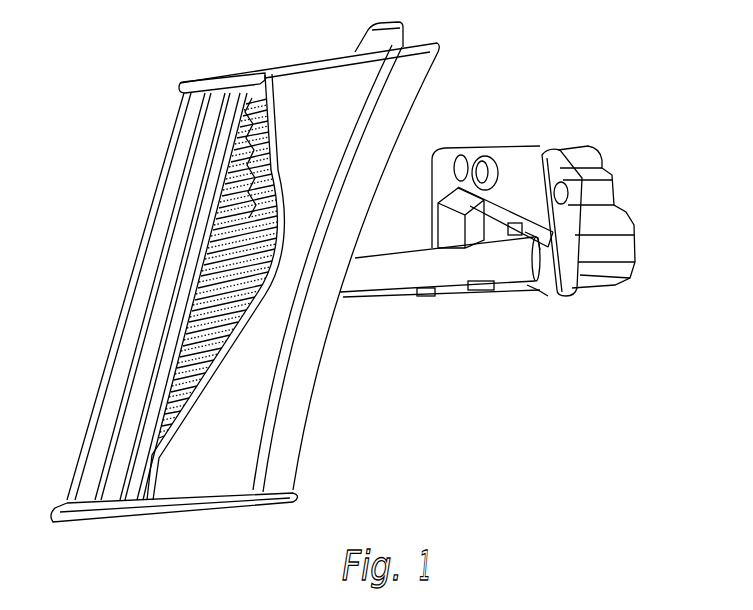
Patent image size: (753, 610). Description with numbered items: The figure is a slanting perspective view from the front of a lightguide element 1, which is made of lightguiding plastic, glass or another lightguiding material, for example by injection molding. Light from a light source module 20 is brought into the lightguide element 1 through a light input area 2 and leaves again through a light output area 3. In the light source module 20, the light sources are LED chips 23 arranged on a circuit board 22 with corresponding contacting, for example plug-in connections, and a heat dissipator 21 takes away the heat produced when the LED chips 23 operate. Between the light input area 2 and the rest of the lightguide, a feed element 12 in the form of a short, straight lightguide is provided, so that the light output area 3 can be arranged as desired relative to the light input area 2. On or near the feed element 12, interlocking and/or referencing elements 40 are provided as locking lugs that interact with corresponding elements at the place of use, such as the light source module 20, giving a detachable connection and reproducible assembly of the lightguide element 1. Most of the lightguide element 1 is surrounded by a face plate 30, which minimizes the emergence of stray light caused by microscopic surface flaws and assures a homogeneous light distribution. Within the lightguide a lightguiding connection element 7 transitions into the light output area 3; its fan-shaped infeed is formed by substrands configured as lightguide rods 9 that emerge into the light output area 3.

The lightguide element 1 is at (525, 47).
The light output area 3 is at (130, 240).
The lightguiding connection element 7 is at (233, 190).
The lightguide rods 9 is at (222, 212).
The feed element 12 is at (385, 280).
The light source module 20 is at (587, 310).
The heat dissipator 21 is at (572, 153).
The circuit board 22 is at (500, 218).
The LED chips 23 is at (538, 282).
The light input area 2 is at (533, 282).
The face plate 30 is at (305, 83).
The interlocking and/or referencing elements 40 is at (510, 225).